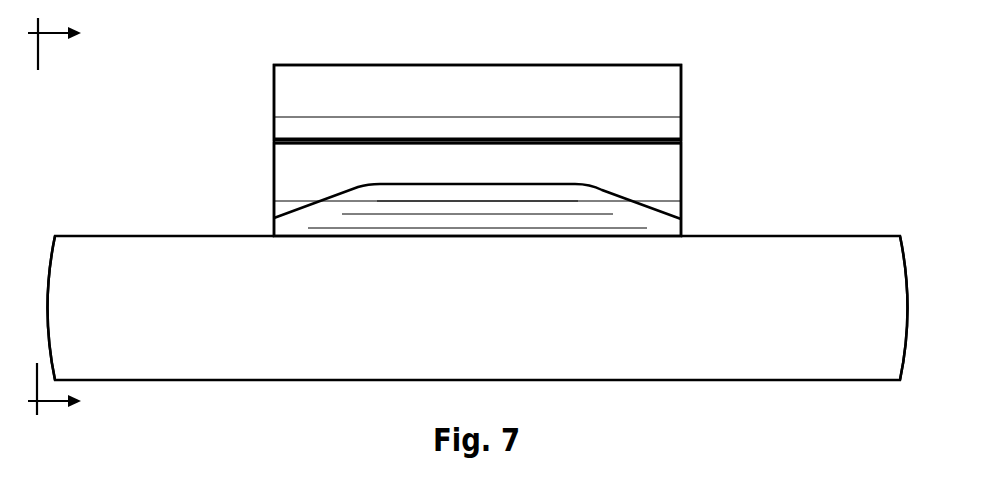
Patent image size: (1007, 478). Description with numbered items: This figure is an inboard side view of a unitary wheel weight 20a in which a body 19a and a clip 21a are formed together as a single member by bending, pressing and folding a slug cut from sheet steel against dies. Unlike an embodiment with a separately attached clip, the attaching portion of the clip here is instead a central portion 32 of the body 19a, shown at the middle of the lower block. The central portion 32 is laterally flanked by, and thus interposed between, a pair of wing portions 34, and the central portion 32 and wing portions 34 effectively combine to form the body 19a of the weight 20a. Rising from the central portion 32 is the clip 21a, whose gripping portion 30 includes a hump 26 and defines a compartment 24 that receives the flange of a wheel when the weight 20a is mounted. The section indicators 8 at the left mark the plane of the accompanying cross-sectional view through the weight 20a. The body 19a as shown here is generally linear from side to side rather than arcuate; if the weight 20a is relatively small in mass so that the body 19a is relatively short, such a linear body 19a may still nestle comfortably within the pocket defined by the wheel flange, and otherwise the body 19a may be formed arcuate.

The section line 8- 8 is at (70, 217).
The body 19a is at (306, 406).
The weight 20a is at (169, 135).
The clip 21a is at (477, 104).
The compartment 24 is at (477, 189).
The hump 26 is at (528, 184).
The gripping portion 30 is at (444, 65).
The central portion 32 is at (478, 308).
The wing portions 34 is at (478, 308).